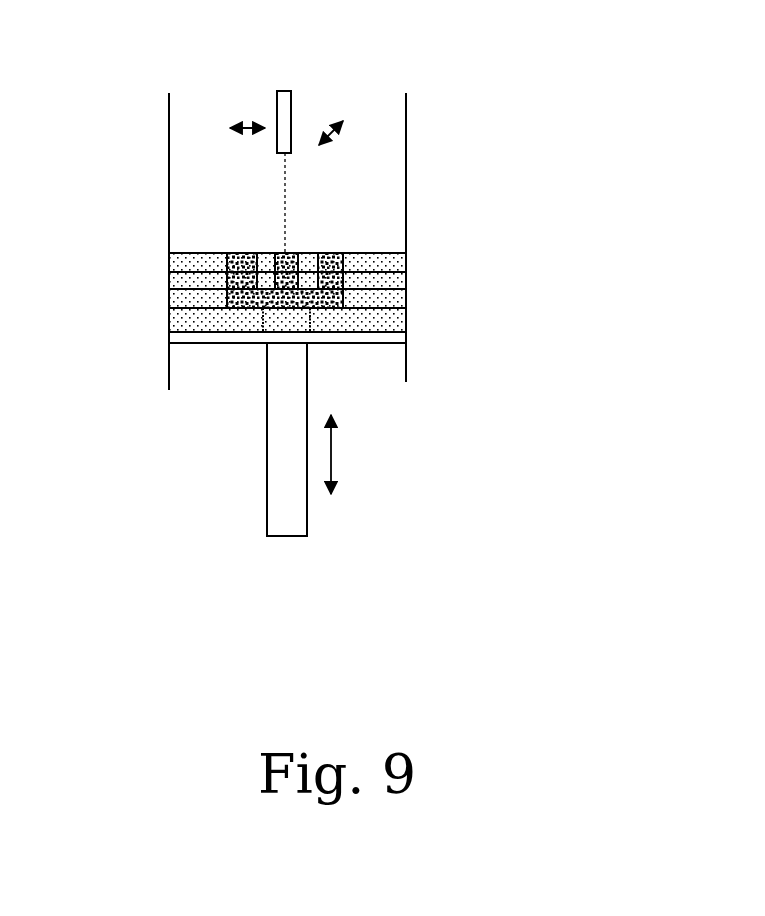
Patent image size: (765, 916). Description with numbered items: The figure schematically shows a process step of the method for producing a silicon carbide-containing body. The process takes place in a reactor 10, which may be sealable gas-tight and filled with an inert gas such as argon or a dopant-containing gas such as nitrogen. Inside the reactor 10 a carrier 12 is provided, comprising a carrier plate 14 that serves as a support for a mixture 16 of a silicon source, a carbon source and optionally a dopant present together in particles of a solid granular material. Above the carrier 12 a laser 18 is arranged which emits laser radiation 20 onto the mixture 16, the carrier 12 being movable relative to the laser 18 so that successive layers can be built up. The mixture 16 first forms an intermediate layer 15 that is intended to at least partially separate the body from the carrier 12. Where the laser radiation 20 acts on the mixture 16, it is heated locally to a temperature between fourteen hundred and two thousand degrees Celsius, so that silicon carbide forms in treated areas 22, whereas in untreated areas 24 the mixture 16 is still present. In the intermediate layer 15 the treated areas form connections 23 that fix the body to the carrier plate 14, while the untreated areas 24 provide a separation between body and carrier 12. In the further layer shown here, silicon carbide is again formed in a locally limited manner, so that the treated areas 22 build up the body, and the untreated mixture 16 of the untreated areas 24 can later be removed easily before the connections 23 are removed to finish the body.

The reactor 10 is at (406, 181).
The carrier 12 is at (280, 438).
The carrier plate 14 is at (198, 333).
The intermediate layer 15 is at (225, 294).
The mixture 16 is at (157, 323).
The laser 18 is at (287, 149).
The laser radiation 20 is at (285, 229).
The treated areas 22 is at (257, 288).
The connections 23 is at (310, 317).
The untreated areas 24 is at (310, 279).